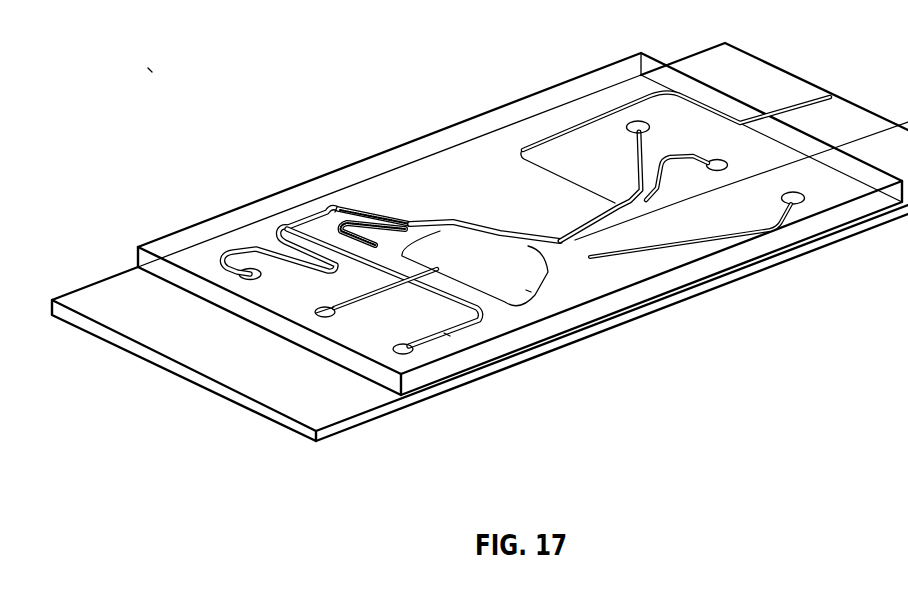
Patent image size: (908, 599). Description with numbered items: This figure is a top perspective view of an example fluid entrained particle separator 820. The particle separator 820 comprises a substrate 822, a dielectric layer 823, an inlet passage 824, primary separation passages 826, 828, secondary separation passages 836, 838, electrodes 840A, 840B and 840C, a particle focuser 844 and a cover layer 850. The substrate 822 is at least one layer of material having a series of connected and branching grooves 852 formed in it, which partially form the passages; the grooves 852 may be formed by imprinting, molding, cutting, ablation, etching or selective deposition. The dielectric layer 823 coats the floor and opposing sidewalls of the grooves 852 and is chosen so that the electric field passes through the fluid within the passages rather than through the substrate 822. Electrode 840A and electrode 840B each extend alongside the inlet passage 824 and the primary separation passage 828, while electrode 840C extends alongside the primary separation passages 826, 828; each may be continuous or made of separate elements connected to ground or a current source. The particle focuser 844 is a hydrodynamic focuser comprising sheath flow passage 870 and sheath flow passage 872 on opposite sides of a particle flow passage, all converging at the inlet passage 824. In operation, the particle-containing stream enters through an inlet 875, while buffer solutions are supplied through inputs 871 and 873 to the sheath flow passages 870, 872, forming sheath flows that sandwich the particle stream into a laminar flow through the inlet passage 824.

The fluid entrained particle separator 820 is at (148, 66).
The substrate 822 is at (332, 432).
The dielectric layer 823 is at (841, 113).
The inlet passage 824 is at (467, 223).
The primary separation passage 826 is at (548, 232).
The primary separation passage 828 is at (539, 276).
The secondary separation passage 836 is at (634, 151).
The secondary separation passage 838 is at (641, 122).
The electrode 840A is at (494, 283).
The electrode 840B is at (460, 153).
The electrode 840C is at (639, 211).
The particle focuser 844 is at (333, 242).
The cover layer 850 is at (480, 252).
The grooves 852 is at (417, 223).
The sheath flow passage 870 is at (340, 208).
The input 871 is at (248, 270).
The sheath flow passage 872 is at (447, 334).
The input 873 is at (395, 348).
The inlet 875 is at (323, 313).